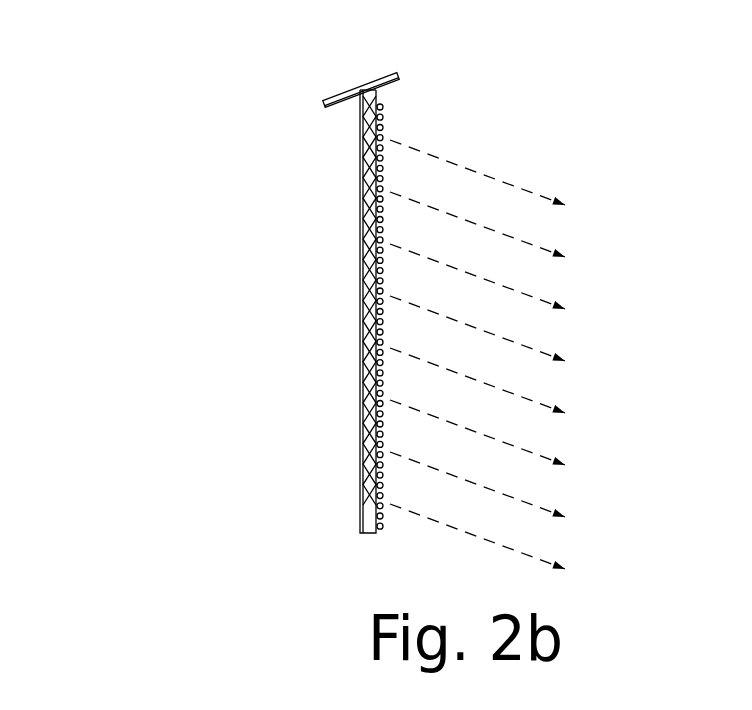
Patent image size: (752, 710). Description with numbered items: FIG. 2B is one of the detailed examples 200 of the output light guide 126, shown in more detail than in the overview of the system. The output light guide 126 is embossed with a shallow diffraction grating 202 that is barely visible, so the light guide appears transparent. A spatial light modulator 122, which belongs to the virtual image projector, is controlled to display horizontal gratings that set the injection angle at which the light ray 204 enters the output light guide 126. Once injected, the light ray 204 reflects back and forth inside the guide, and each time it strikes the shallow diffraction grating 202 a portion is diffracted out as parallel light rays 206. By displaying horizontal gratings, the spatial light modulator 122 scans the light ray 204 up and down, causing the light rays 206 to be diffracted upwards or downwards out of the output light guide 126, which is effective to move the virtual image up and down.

The detailed examples 200 is at (157, 97).
The spatial light modulator 122 is at (407, 65).
The light ray 204 is at (362, 87).
The output light guide 126 is at (347, 263).
The shallow diffraction grating 202 is at (387, 122).
The light rays 206 is at (571, 205).